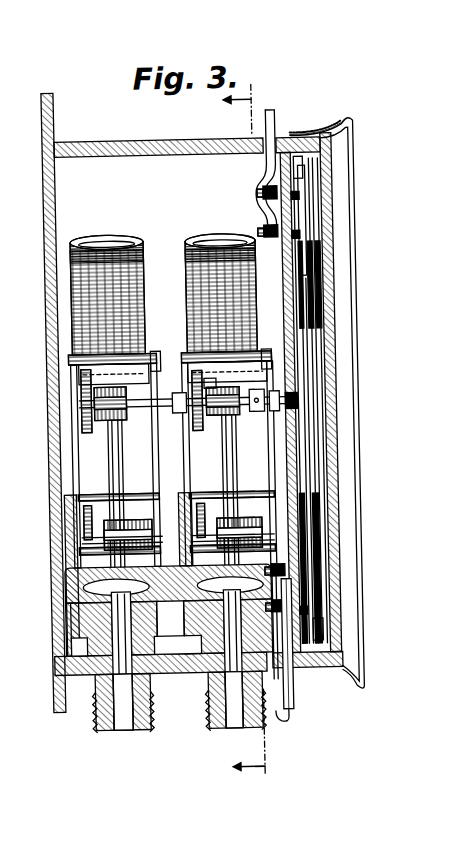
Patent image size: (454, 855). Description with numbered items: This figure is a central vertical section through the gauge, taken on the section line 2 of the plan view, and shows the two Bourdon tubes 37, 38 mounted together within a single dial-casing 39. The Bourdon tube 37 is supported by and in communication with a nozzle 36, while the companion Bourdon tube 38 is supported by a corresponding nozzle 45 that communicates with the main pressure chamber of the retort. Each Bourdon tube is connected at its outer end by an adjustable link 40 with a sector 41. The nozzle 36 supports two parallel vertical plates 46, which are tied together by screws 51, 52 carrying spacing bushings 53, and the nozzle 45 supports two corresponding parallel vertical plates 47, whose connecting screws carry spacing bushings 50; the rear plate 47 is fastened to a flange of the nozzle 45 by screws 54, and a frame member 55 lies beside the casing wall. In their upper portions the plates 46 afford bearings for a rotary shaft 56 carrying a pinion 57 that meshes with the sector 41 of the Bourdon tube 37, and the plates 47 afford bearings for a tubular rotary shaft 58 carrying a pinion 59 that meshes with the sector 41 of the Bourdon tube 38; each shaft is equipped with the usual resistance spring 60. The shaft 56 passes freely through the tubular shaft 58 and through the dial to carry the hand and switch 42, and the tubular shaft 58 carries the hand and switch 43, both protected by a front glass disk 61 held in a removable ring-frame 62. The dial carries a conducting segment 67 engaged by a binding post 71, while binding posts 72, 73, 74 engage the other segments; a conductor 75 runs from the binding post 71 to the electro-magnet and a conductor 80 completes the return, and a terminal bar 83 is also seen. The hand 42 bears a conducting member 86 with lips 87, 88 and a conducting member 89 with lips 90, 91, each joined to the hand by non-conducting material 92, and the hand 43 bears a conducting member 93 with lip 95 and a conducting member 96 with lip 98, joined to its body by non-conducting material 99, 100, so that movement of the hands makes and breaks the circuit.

The section line 2- 2 is at (248, 435).
The nozzle 36 is at (119, 729).
The Bourdon tube 37 is at (109, 235).
The Bourdon tube 38 is at (211, 235).
The dial-casing 39 is at (49, 206).
The adjustable link 40 is at (113, 448).
The sector 41 is at (117, 468).
The hand and switch 42 is at (310, 354).
The hand and switch 43 is at (320, 332).
The nozzle 45 is at (234, 730).
The parallel vertical plates 46 is at (147, 498).
The parallel vertical plates 47 is at (155, 460).
The spacing bushing 50 is at (229, 338).
The screw 51 is at (160, 352).
The screw 52 is at (135, 552).
The spacing bushing 53 is at (110, 350).
The screw 54 is at (182, 491).
The side frame member 55 is at (63, 517).
The rotary shaft 56 is at (120, 418).
The pinion 57 is at (82, 412).
The tubular rotary shaft 58 is at (238, 416).
The pinion 59 is at (210, 422).
The resistance spring 60 is at (83, 392).
The front glass disk 61 is at (359, 298).
The removable ring-frame 62 is at (338, 422).
The conducting segment 67 is at (298, 212).
The binding post 71 is at (268, 191).
The binding post 72 is at (266, 233).
The binding post 73 is at (271, 680).
The binding post 74 is at (240, 585).
The conductor 75 is at (283, 127).
The conductor 80 is at (270, 122).
The terminal bar 83 is at (289, 699).
The conducting member 86 is at (311, 185).
The lip 87 is at (309, 167).
The lip 88 is at (305, 199).
The conducting member 89 is at (305, 616).
The lip 90 is at (340, 665).
The lip 91 is at (284, 571).
The non-conducting material 92 is at (323, 267).
The conducting member 93 is at (316, 247).
The lip 95 is at (305, 238).
The conducting member 96 is at (71, 476).
The lip 98 is at (284, 608).
The non-conducting material 99 is at (319, 302).
The non-conducting material 100 is at (304, 472).